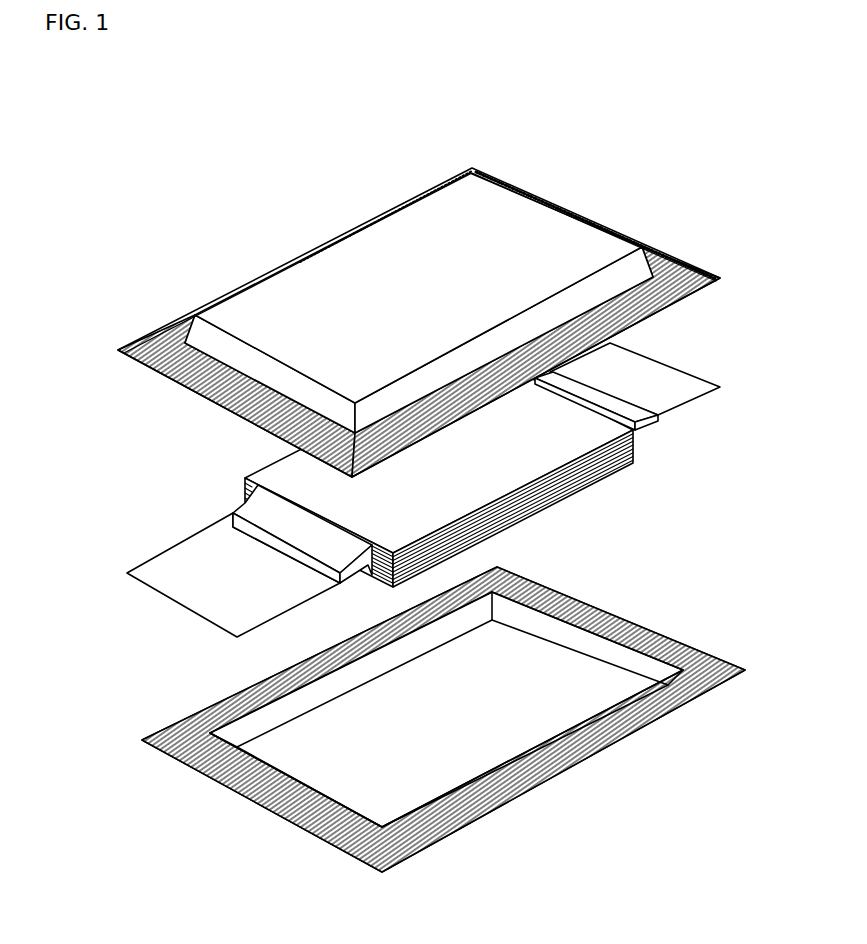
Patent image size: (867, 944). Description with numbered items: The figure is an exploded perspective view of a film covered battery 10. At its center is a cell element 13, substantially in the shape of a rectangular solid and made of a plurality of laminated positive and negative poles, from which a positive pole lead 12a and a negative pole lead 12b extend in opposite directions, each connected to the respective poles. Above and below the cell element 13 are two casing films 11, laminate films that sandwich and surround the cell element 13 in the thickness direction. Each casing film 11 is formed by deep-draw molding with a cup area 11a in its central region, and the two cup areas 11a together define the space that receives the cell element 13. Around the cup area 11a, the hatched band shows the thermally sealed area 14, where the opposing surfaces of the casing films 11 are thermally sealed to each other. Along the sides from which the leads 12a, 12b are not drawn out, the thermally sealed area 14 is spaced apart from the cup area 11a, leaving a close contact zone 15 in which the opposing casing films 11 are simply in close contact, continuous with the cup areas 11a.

The film covered battery 10 is at (139, 223).
The casing film 11 is at (419, 520).
The cup area 11a is at (390, 243).
The positive pole lead 12a is at (198, 593).
The negative pole lead 12b is at (682, 390).
The cell element 13 is at (580, 472).
The thermally sealed area 14 is at (197, 384).
The close contact zone 15 is at (613, 307).